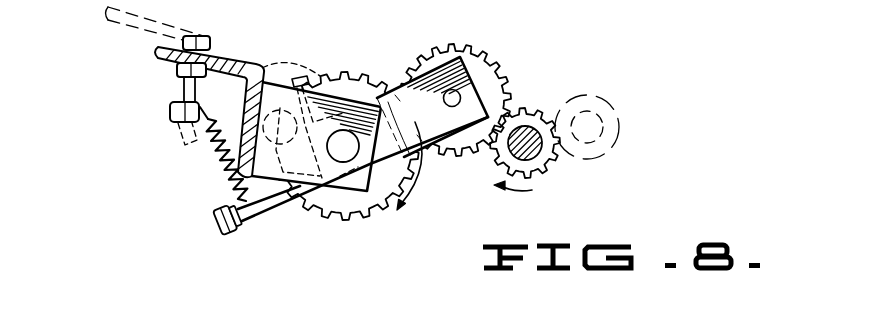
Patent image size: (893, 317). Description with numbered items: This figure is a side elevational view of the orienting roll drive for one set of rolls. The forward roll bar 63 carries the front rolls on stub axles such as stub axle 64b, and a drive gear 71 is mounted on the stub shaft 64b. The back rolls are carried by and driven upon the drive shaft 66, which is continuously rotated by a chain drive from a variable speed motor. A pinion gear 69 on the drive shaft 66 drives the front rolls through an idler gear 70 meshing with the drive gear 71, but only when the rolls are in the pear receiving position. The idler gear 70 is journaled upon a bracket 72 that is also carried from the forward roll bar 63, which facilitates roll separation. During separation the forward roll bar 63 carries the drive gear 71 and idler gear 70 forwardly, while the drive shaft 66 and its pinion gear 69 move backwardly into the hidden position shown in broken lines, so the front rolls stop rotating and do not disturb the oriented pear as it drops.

The forward roll bar 63 is at (232, 60).
The stub axle 64b is at (343, 152).
The drive shaft 66 is at (528, 128).
The pinion gear 69 is at (538, 171).
The idler gear 70 is at (458, 44).
The drive gear 71 is at (362, 218).
The bracket 72 is at (395, 88).